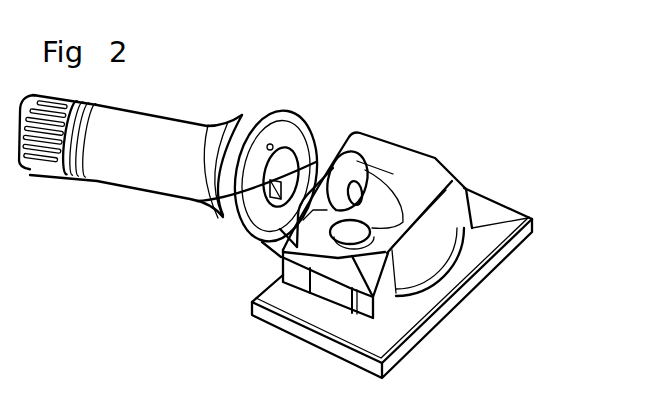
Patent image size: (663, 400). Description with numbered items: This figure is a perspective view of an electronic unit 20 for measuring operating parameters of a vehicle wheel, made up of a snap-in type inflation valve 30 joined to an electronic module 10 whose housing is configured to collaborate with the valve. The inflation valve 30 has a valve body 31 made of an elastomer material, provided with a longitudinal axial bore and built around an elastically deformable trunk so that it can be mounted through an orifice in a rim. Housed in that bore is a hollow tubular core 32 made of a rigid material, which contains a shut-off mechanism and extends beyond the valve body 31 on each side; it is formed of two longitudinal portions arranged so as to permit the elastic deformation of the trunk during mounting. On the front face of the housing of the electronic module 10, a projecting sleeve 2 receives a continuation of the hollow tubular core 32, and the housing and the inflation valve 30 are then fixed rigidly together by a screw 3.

The sleeve 2 is at (318, 158).
The screw 3 is at (348, 182).
The electronic module 10 is at (437, 214).
The electronic unit 20 is at (489, 93).
The inflation valve 30 is at (108, 183).
The valve body 31 is at (170, 138).
The hollow tubular core 32 is at (230, 219).